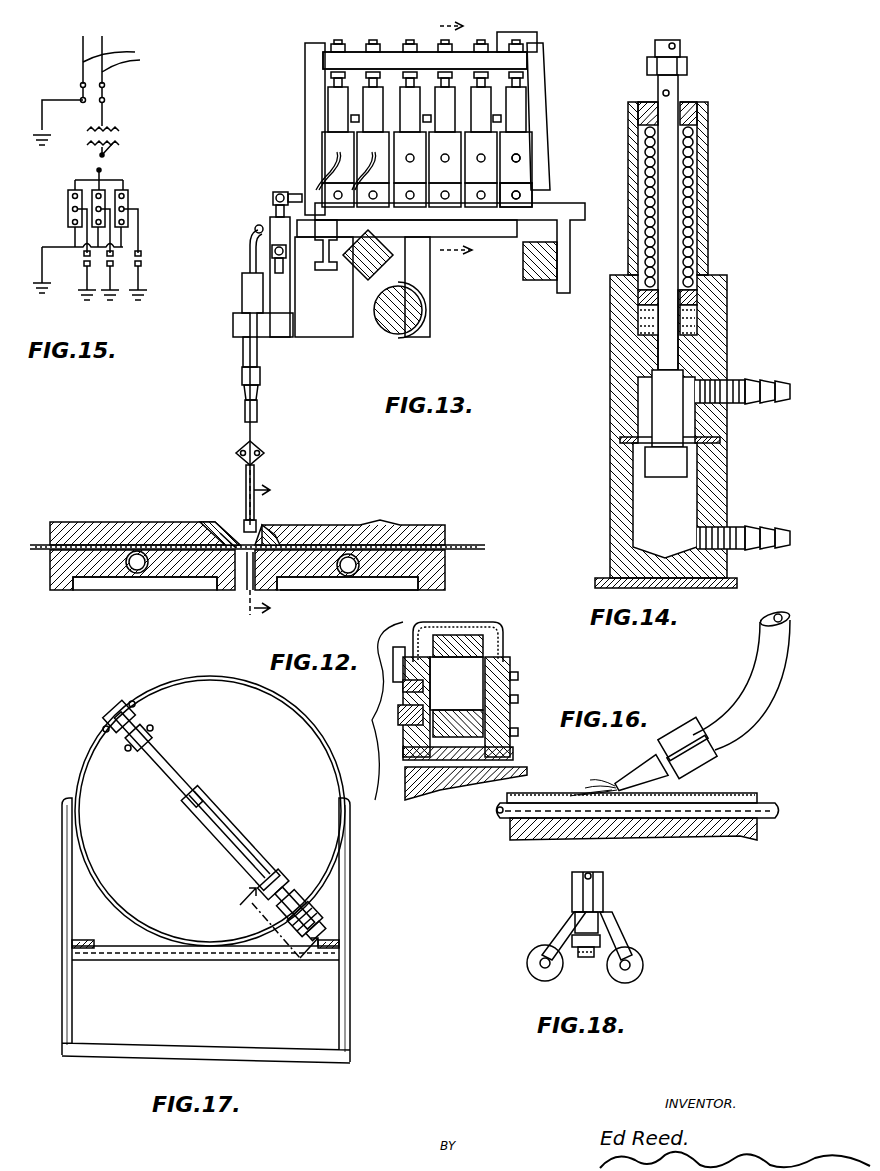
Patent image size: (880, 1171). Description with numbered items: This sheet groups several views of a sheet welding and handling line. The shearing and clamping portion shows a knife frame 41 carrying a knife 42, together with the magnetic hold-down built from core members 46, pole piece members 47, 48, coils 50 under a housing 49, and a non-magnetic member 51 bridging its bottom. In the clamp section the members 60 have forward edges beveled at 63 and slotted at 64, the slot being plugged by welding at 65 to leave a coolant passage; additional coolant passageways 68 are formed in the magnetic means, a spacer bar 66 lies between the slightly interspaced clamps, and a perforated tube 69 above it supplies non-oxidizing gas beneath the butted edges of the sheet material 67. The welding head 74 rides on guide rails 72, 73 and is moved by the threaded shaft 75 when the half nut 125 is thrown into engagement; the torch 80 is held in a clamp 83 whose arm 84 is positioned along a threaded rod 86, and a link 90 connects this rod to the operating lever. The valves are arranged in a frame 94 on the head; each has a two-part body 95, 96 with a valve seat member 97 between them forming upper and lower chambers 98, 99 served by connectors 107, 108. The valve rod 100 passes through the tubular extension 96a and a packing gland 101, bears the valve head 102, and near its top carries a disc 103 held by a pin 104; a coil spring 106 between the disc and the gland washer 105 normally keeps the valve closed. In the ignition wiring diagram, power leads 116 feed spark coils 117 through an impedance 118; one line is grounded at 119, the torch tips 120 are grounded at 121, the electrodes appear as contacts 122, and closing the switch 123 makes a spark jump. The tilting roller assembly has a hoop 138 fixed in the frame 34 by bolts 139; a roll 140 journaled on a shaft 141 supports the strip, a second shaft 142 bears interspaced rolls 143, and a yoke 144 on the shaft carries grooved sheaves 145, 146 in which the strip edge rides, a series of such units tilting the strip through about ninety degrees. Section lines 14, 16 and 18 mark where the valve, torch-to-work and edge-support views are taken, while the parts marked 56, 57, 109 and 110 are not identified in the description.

In FIG. 15, the power leads 116 is at (127, 59).
In FIG. 15, the spark coils 117 is at (130, 195).
In FIG. 15, the impedance 118 is at (125, 130).
In FIG. 15, the ground 119 is at (48, 148).
In FIG. 15, the torch tips 120 is at (141, 266).
In FIG. 15, the ground 121 is at (143, 297).
In FIG. 15, the contacts 122 is at (142, 255).
In FIG. 15, the switch 123 is at (112, 150).
In FIG. 13, the frame 94 is at (538, 108).
In FIG. 13, the manifold bar 109 is at (325, 60).
In FIG. 13, the clamp nuts 110 is at (375, 45).
In FIG. 13, the section line 14 is at (466, 140).
In FIG. 13, the valve body part 96 is at (520, 140).
In FIG. 14, the valve body part 96 is at (612, 380).
In FIG. 13, the connector 108 is at (512, 165).
In FIG. 14, the connector 108 is at (760, 405).
In FIG. 13, the valve body part 95 is at (545, 185).
In FIG. 14, the valve body part 95 is at (612, 497).
In FIG. 13, the connector 107 is at (520, 197).
In FIG. 14, the connector 107 is at (740, 520).
In FIG. 13, the head 74 is at (553, 200).
In FIG. 13, the guide rail 73 is at (545, 280).
In FIG. 13, the guide rail 72 is at (362, 275).
In FIG. 13, the threaded shaft 75 is at (380, 330).
In FIG. 13, the half nut 125 is at (423, 280).
In FIG. 13, the arm 84 is at (280, 305).
In FIG. 13, the link 90 is at (272, 198).
In FIG. 13, the threaded rod 86 is at (270, 250).
In FIG. 13, the torch 80 is at (262, 370).
In FIG. 13, the clamp 83 is at (236, 340).
In FIG. 12, the clamping members 60 is at (318, 525).
In FIG. 12, the coolant passageways 68 is at (318, 583).
In FIG. 12, the tube 69 is at (180, 578).
In FIG. 16, the tube 69 is at (778, 788).
In FIG. 12, the sheet material 67 is at (418, 525).
In FIG. 16, the sheet material 67 is at (718, 778).
In FIG. 12, the slot 64 is at (200, 522).
In FIG. 12, the weld plug 65 is at (225, 528).
In FIG. 12, the beveled edge 63 is at (246, 520).
In FIG. 12, the guide block 57 is at (372, 522).
In FIG. 12, the spacer bar 66 is at (245, 588).
In FIG. 12, the support 56 is at (380, 597).
In FIG. 12, the section line 16 is at (272, 544).
In FIG. 12, the housing 49 is at (465, 615).
In FIG. 12, the coils 50 is at (485, 648).
In FIG. 12, the core members 46 is at (456, 683).
In FIG. 12, the knife frame 41 is at (398, 690).
In FIG. 12, the pole piece member 47 is at (403, 713).
In FIG. 12, the knife 42 is at (400, 733).
In FIG. 12, the pole piece member 48 is at (508, 725).
In FIG. 12, the non-magnetic member 51 is at (512, 752).
In FIG. 14, the valve rod 100 is at (672, 242).
In FIG. 14, the pin 104 is at (672, 90).
In FIG. 14, the tubular extension 96a is at (708, 175).
In FIG. 14, the disc 103 is at (692, 103).
In FIG. 14, the coil spring 106 is at (690, 200).
In FIG. 14, the washer 105 is at (692, 300).
In FIG. 14, the packing gland 101 is at (690, 320).
In FIG. 14, the upper chamber 98 is at (650, 400).
In FIG. 14, the valve seat member 97 is at (622, 440).
In FIG. 14, the lower chamber 99 is at (665, 500).
In FIG. 14, the valve head 102 is at (680, 465).
In FIG. 17, the hoop 138 is at (332, 745).
In FIG. 17, the bolts 139 is at (212, 958).
In FIG. 17, the shaft 141 is at (136, 748).
In FIG. 18, the shaft 141 is at (593, 893).
In FIG. 17, the roll 140 is at (200, 820).
In FIG. 17, the second shaft 142 is at (225, 775).
In FIG. 17, the rolls 143 is at (278, 870).
In FIG. 17, the yoke 144 is at (295, 902).
In FIG. 18, the yoke 144 is at (622, 925).
In FIG. 17, the sheave 145 is at (318, 925).
In FIG. 18, the sheave 145 is at (640, 975).
In FIG. 18, the sheave 146 is at (548, 980).
In FIG. 17, the frame 34 is at (350, 908).
In FIG. 17, the section line 18 is at (266, 938).